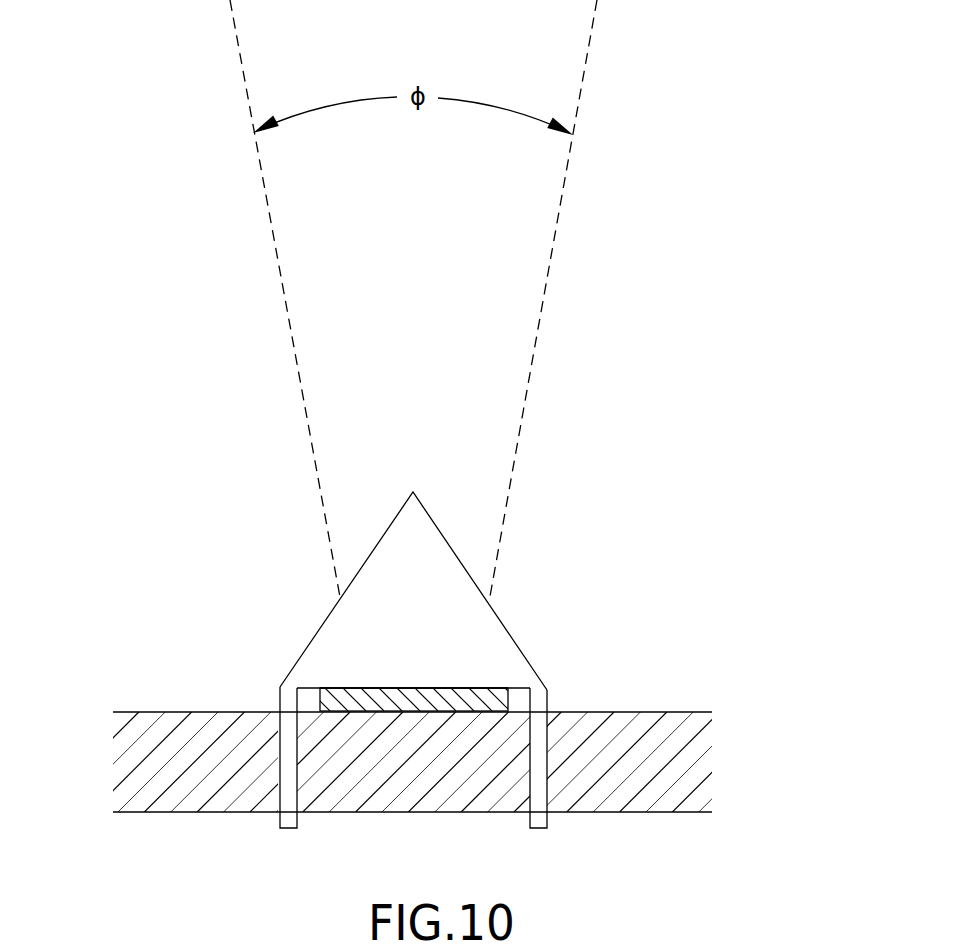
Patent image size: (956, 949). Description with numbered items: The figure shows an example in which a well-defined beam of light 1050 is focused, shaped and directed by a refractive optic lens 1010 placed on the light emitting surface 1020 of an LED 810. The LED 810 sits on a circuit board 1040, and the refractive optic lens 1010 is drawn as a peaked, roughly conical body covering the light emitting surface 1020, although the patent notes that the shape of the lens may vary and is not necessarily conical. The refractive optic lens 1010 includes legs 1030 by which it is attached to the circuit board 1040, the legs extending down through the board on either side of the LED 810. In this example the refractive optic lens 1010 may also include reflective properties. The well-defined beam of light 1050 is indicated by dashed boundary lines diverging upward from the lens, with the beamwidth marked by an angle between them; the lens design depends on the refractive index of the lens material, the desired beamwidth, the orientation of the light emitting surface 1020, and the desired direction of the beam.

The LED 810 is at (466, 718).
The refractive optic lens 1010 is at (520, 618).
The light emitting surface 1020 is at (404, 677).
The legs 1030 is at (560, 693).
The circuit board 1040 is at (662, 783).
The well-defined beam of light 1050 is at (560, 243).